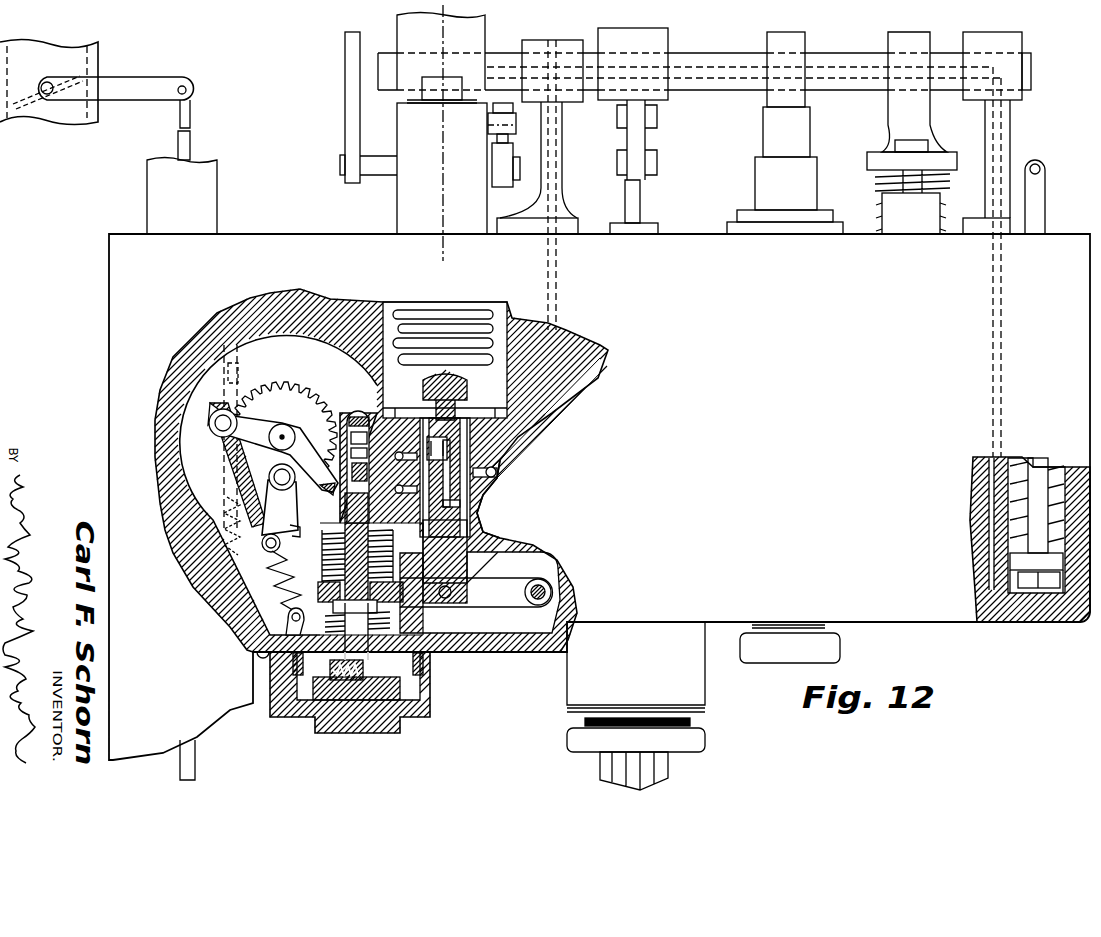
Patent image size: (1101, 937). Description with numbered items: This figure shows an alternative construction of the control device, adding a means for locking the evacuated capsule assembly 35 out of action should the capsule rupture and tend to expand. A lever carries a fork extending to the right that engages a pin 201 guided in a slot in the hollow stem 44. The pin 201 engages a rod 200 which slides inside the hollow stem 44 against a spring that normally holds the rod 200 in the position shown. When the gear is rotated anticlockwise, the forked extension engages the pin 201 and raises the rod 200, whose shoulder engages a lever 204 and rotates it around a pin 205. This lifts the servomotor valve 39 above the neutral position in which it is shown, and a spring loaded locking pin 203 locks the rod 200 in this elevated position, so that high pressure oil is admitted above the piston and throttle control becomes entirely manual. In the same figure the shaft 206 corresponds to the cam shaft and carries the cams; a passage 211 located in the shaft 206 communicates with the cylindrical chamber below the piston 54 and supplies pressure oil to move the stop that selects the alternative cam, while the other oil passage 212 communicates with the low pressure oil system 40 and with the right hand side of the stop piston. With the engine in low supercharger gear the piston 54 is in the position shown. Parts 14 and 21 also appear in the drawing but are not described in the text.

The cylinder 14 is at (443, 261).
The shaft 206 is at (706, 53).
The passage 211 is at (836, 66).
The oil passage 212 is at (570, 330).
The evacuated capsule assembly 35 is at (485, 362).
The low pressure oil system 40 is at (527, 441).
The hollow stem 44 is at (361, 418).
The pin 201 is at (316, 450).
The lever arm 21 is at (280, 508).
The rod 200 is at (327, 557).
The servomotor valve 39 is at (470, 560).
The lever 204 is at (507, 598).
The pin 205 is at (553, 594).
The spring loaded locking pin 203 is at (363, 687).
The piston 54 is at (1030, 539).